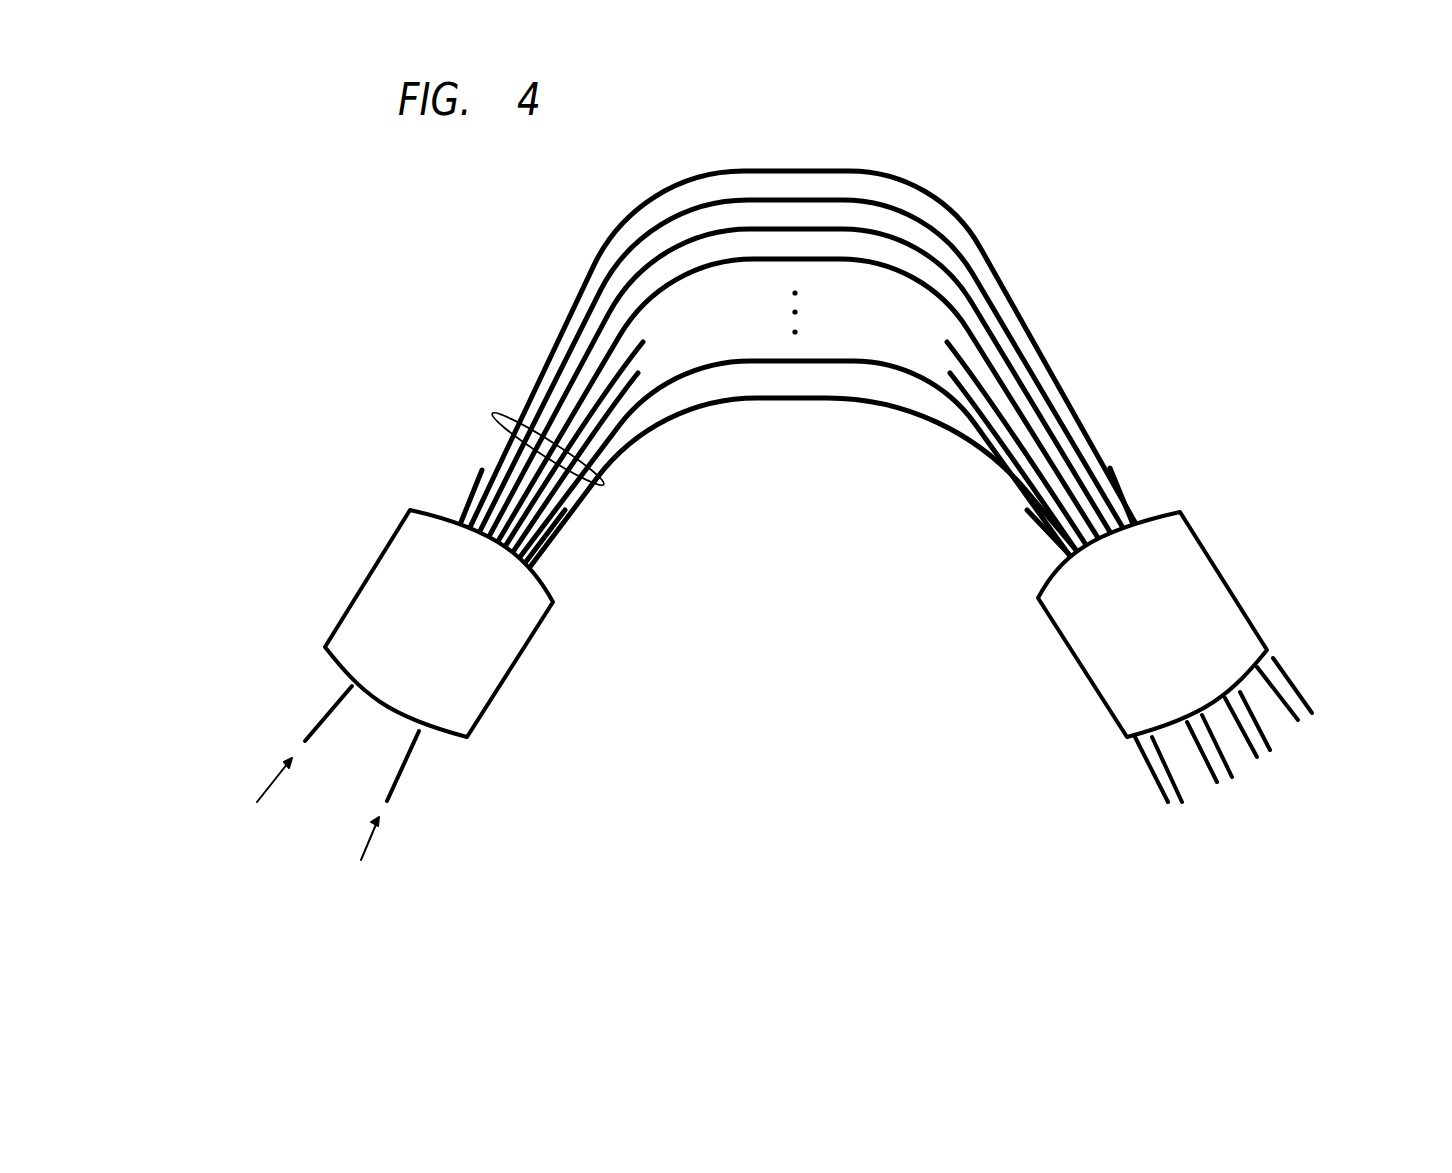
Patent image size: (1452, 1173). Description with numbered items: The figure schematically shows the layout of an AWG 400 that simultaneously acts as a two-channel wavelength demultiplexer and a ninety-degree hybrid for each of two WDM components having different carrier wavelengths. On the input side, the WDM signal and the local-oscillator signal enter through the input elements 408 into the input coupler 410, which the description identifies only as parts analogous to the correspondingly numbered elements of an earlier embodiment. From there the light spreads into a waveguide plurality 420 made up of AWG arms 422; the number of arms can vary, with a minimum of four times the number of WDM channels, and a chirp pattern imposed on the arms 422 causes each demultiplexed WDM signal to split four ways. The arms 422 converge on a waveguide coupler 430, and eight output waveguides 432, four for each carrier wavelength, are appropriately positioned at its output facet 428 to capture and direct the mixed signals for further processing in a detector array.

The AWG 400 is at (497, 180).
The input optical fibers (WDM signal and LO signal) 408 is at (437, 795).
The input fiber coupler / connector block 410 is at (372, 568).
The waveguide plurality 420 is at (498, 417).
The AWG arms 422 is at (805, 169).
The output facet 428 is at (1210, 707).
The waveguide coupler 430 is at (1222, 566).
The output waveguides 432 is at (1275, 684).